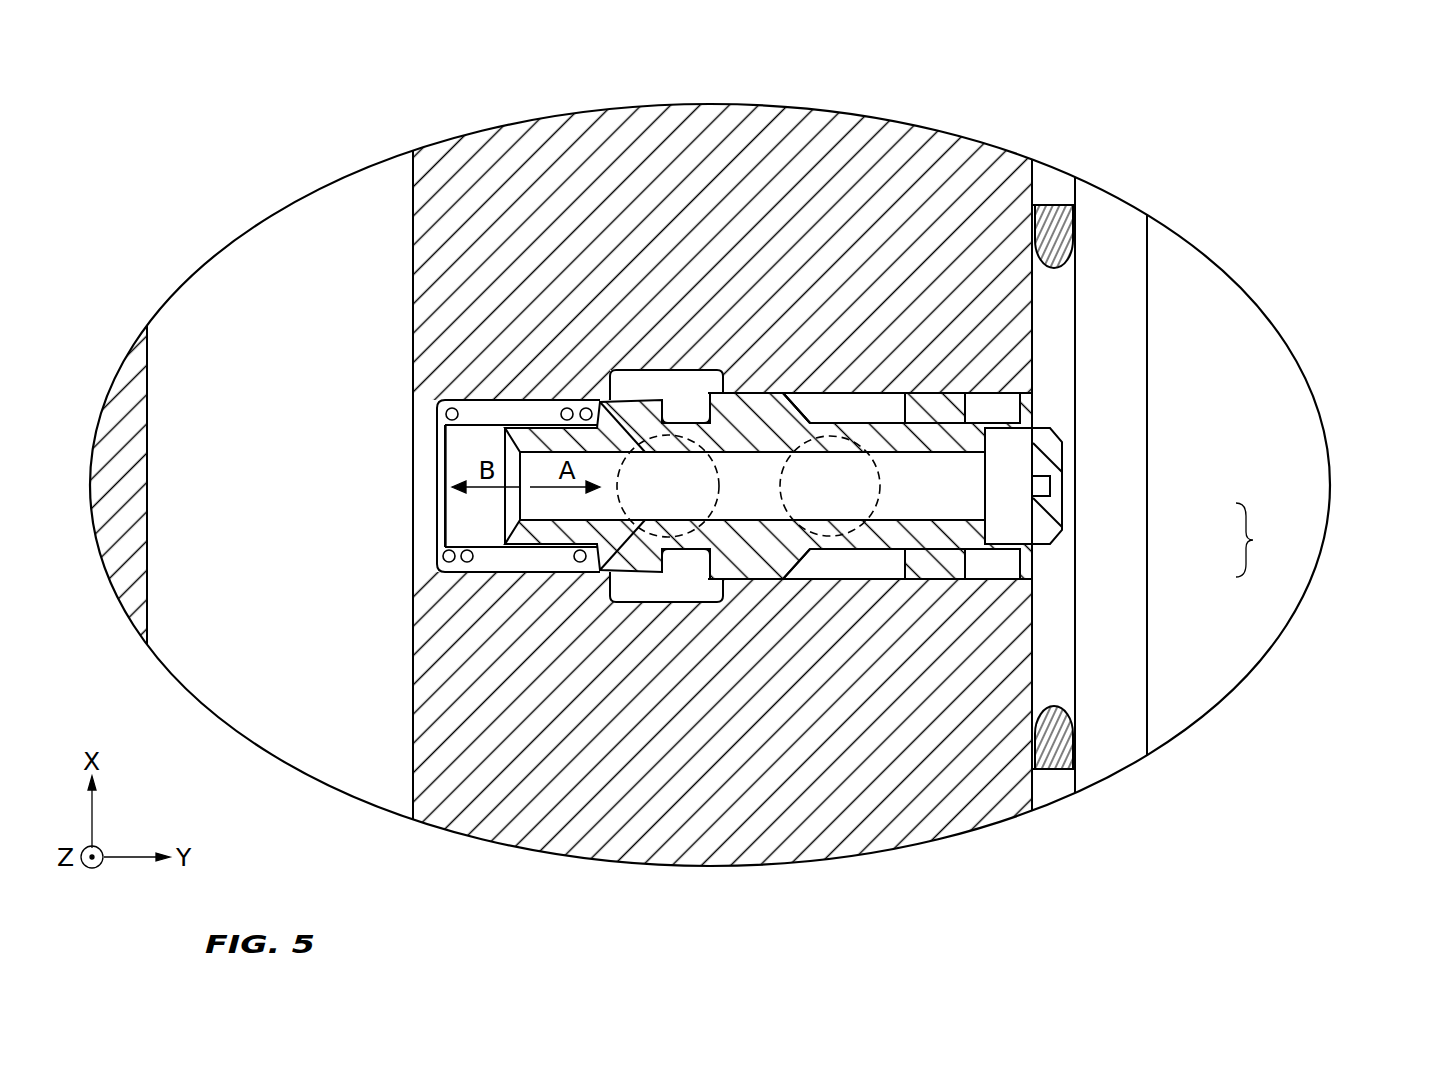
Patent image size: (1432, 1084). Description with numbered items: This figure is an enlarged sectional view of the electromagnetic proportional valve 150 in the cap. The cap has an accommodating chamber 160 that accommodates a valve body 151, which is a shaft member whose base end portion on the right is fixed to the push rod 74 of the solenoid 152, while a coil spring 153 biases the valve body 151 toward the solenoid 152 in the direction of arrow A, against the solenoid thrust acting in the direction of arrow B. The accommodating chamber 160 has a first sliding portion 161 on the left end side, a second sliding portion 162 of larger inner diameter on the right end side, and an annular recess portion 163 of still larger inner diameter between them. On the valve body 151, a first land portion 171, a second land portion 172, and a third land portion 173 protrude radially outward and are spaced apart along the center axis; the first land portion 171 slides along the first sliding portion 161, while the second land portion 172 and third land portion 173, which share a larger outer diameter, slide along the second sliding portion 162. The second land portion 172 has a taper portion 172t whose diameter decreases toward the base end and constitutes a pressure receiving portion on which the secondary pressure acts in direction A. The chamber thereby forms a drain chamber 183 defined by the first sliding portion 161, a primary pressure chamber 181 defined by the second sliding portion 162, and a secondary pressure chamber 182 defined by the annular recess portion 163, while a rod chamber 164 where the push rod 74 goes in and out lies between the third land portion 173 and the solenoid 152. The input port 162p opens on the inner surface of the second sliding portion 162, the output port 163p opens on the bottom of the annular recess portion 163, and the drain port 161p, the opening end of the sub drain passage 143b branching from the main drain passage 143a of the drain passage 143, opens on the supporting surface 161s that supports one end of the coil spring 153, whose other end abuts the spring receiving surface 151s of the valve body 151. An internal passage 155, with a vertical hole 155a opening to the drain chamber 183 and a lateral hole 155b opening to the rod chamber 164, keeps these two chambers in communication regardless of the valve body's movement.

The electromagnetic proportional valve 150 is at (1298, 122).
The drain passage 143 is at (561, 431).
The main drain passage 143a is at (325, 222).
The sub drain passage 143b is at (428, 447).
The valve body 151 is at (1047, 425).
The spring receiving surface 151s is at (583, 412).
The solenoid 152 is at (1188, 272).
The coil spring 153 is at (450, 408).
The internal passage 155 is at (1129, 502).
The vertical hole 155a is at (955, 488).
The lateral hole 155b is at (1015, 530).
The accommodating chamber 160 is at (850, 391).
The first sliding portion 161 is at (566, 572).
The drain port 161p is at (437, 487).
The supporting surface 161s is at (437, 522).
The second sliding portion 162 is at (879, 525).
The input port 162p is at (880, 457).
The annular recess portion 163 is at (697, 602).
The output port 163p is at (719, 470).
The rod chamber 164 is at (1033, 573).
The first land portion 171 is at (638, 398).
The second land portion 172 is at (719, 400).
The taper portion 172t is at (784, 405).
The third land portion 173 is at (947, 398).
The primary pressure chamber 181 is at (832, 562).
The secondary pressure chamber 182 is at (632, 583).
The drain chamber 183 is at (484, 522).
The push rod 74 is at (1072, 444).